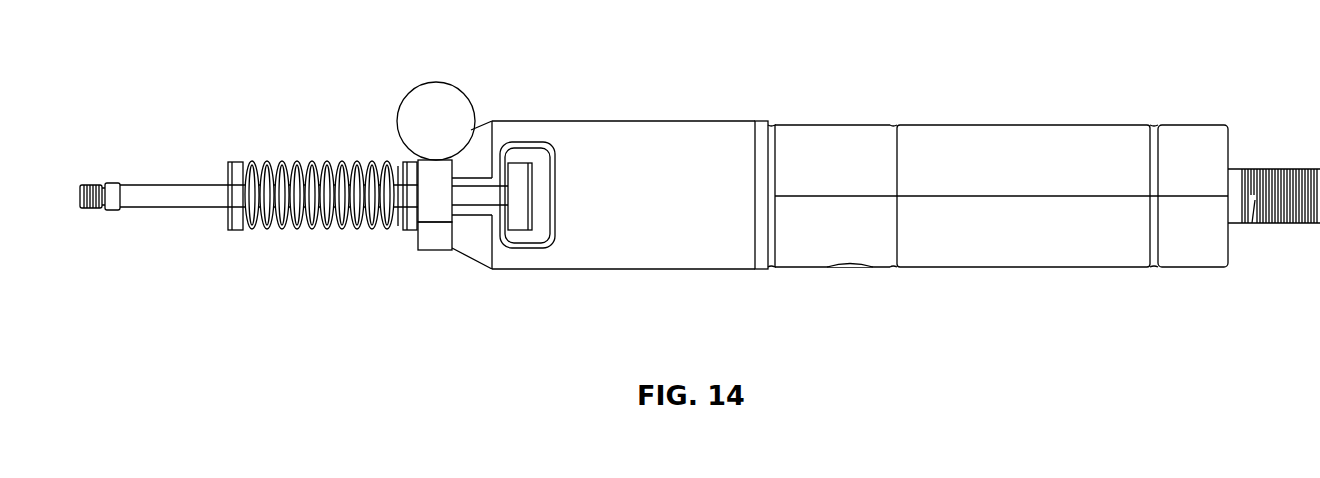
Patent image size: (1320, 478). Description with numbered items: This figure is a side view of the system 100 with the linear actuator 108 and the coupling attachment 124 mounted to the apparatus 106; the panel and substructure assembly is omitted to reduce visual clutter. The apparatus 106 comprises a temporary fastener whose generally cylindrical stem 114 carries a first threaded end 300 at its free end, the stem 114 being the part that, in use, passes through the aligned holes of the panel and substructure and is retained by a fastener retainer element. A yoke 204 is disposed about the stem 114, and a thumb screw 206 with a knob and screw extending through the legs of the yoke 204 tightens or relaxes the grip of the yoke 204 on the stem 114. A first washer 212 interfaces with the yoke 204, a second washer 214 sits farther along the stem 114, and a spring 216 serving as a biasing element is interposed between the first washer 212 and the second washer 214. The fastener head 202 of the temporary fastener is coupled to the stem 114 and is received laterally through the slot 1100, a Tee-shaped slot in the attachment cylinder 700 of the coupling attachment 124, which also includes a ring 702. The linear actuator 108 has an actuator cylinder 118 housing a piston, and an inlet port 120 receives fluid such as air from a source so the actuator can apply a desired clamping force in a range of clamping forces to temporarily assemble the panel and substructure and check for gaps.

The system 100 is at (186, 72).
The apparatus 106 is at (330, 140).
The linear actuator 108 is at (974, 105).
The stem 114 is at (172, 200).
The actuator cylinder 118 is at (1105, 255).
The inlet port 120 is at (858, 275).
The coupling attachment 124 is at (615, 105).
The fastener head 202 is at (523, 218).
The yoke 204 is at (437, 237).
The thumb screw 206 is at (467, 72).
The first washer 212 is at (412, 230).
The second washer 214 is at (238, 228).
The spring 216 is at (370, 228).
The first threaded end 300 is at (84, 218).
The attachment cylinder 700 is at (693, 121).
The ring 702 is at (768, 123).
The slot 1100 is at (540, 232).